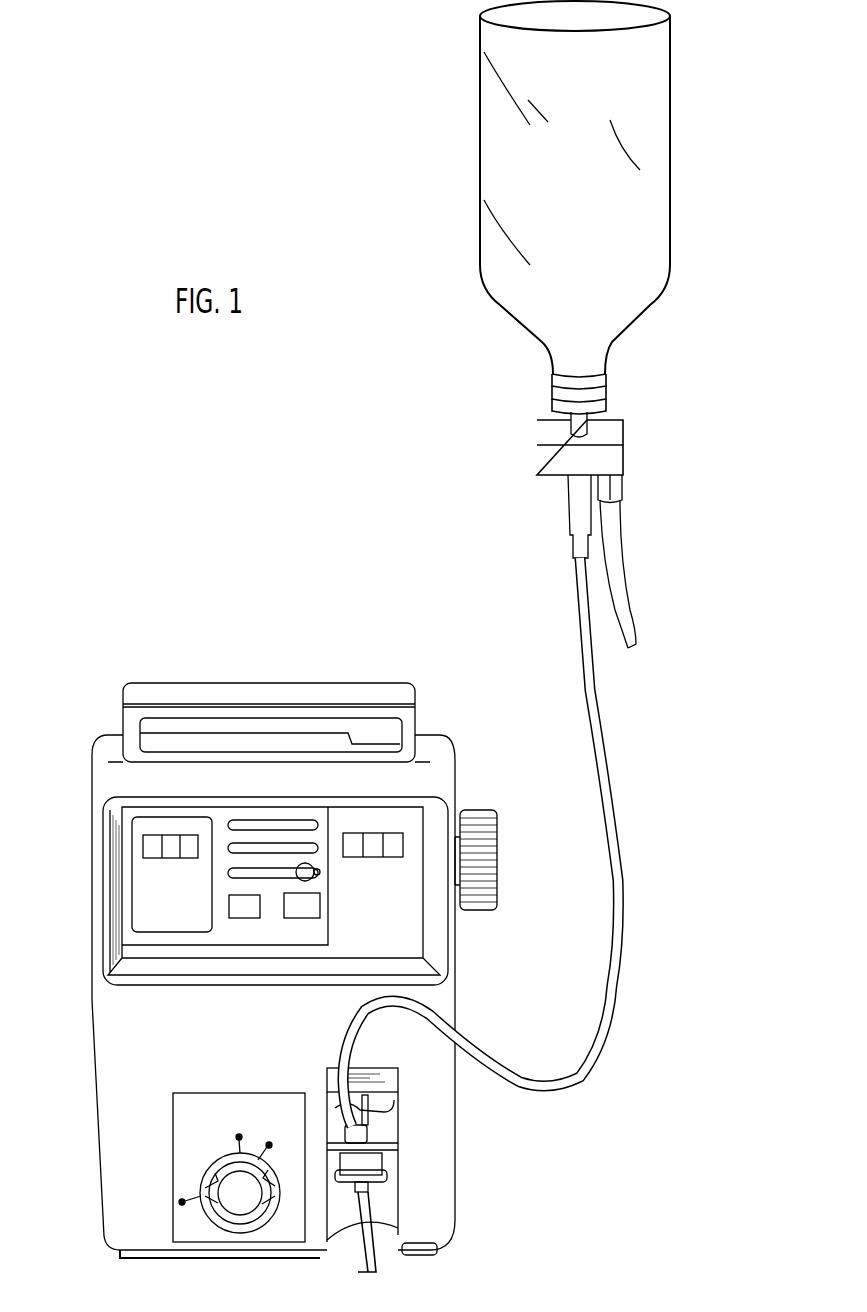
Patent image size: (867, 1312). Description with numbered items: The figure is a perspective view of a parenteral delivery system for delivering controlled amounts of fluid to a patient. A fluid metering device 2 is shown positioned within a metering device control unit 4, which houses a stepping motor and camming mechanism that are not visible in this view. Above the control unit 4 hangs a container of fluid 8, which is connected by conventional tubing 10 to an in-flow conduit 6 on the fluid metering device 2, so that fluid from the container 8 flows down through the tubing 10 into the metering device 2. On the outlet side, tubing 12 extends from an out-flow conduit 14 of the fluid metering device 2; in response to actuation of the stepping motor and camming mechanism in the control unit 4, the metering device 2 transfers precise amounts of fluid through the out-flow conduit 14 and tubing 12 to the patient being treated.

The fluid metering device 2 is at (398, 1160).
The metering device control unit 4 is at (66, 972).
The in-flow conduit 6 is at (369, 1133).
The container of fluid 8 is at (672, 188).
The tubing 10 is at (614, 765).
The tubing 12 is at (378, 1262).
The out-flow conduit 14 is at (370, 1188).